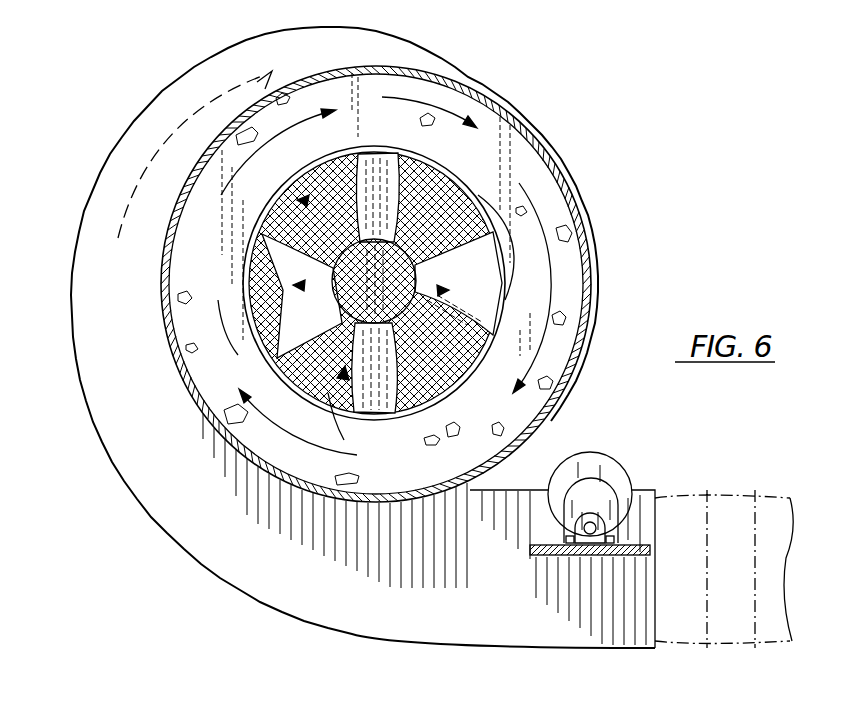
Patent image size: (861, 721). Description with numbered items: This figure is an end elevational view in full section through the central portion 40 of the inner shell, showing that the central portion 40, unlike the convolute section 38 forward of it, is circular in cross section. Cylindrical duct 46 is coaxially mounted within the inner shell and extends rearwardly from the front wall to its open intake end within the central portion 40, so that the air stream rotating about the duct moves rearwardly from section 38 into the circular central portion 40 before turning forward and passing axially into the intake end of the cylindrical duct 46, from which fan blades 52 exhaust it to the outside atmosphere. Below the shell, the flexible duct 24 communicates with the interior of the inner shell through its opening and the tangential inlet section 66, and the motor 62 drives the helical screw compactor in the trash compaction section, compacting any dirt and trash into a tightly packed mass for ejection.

The section 38 is at (395, 32).
The central portion 40 is at (470, 82).
The cylindrical duct 46 is at (385, 148).
The fan blades 52 is at (377, 198).
The motor 62 is at (597, 452).
The flexible duct 24 is at (731, 498).
The inlet section 66 is at (547, 610).